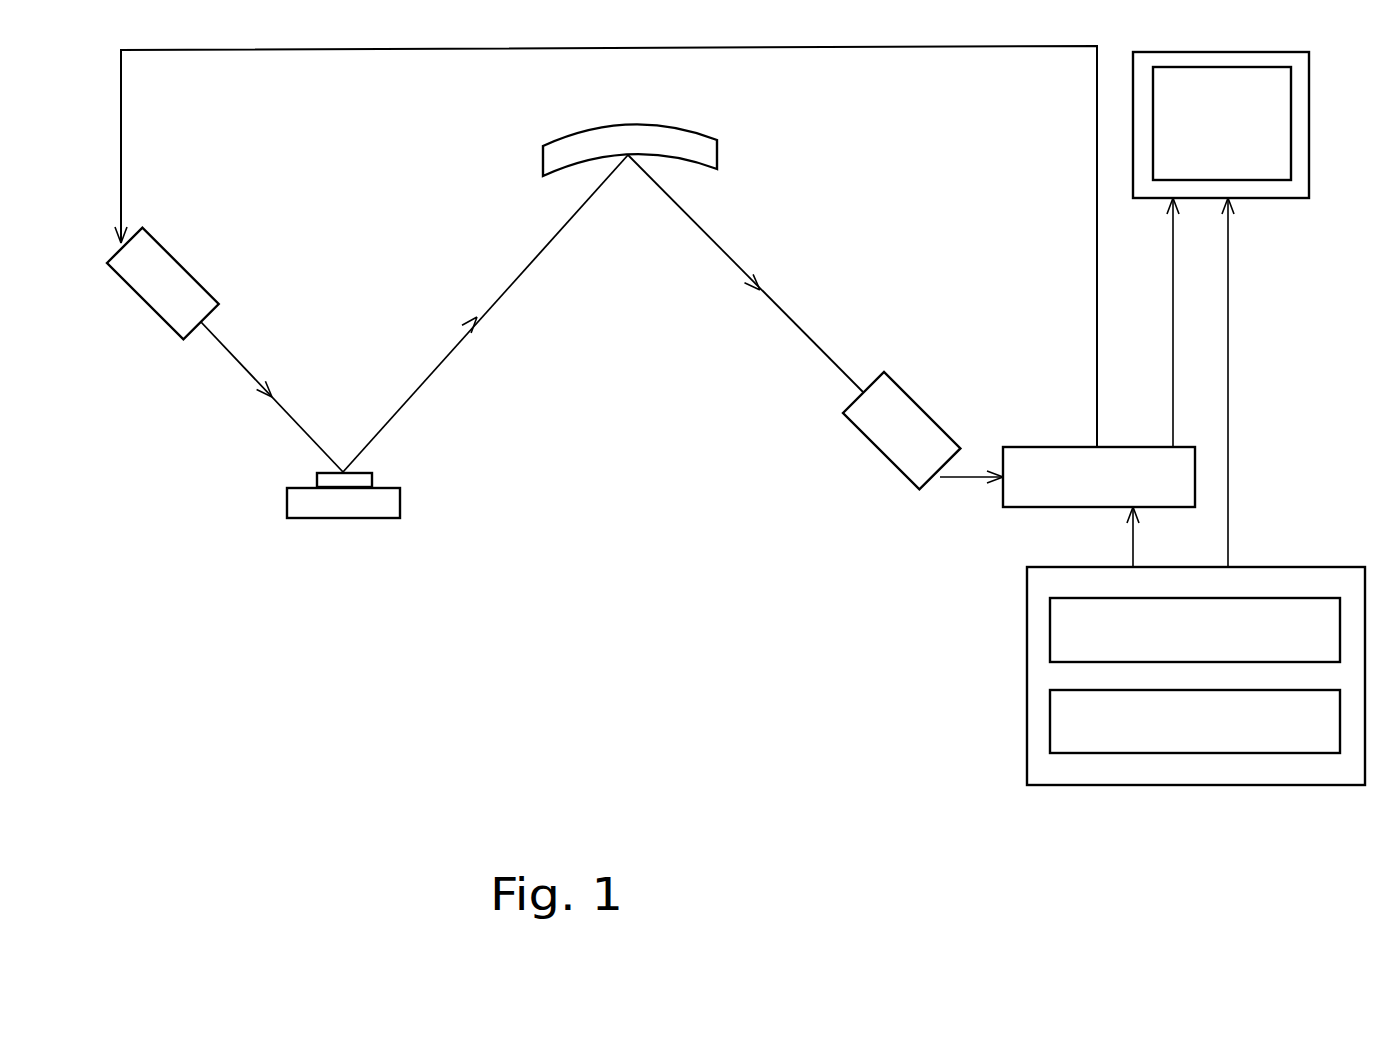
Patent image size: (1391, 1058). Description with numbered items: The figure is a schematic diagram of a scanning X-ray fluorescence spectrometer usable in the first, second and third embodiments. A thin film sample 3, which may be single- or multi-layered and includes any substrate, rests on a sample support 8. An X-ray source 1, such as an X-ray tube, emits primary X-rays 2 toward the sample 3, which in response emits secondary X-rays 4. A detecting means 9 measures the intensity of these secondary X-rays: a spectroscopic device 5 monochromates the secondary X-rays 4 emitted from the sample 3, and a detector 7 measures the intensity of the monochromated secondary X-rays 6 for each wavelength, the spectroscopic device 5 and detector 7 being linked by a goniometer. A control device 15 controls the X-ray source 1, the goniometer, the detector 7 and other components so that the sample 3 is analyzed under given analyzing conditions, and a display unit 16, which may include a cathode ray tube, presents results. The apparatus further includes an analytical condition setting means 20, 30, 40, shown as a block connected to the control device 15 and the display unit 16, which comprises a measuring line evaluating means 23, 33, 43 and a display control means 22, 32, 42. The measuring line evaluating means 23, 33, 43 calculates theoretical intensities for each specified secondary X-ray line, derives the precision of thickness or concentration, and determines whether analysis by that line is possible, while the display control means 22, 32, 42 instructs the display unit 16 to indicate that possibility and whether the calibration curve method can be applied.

The X-ray source 1 is at (178, 264).
The primary X-rays 2 is at (232, 352).
The thin film sample 3 is at (372, 478).
The secondary X-rays 4 is at (517, 282).
The spectroscopic device 5 is at (717, 152).
The secondary X-rays 6 is at (797, 327).
The detector 7 is at (917, 405).
The sample support 8 is at (400, 500).
The detecting means 9 is at (787, 400).
The control device 15 is at (1068, 447).
The display unit 16 is at (1309, 130).
The analytical condition setting means 20 is at (1086, 657).
The analytical condition setting means 30 is at (1086, 657).
The analytical condition setting means 40 is at (1072, 568).
The measuring line evaluating means 23 is at (1074, 632).
The measuring line evaluating means 33 is at (1074, 632).
The measuring line evaluating means 43 is at (1049, 632).
The display control means 22 is at (1079, 723).
The display control means 32 is at (1079, 723).
The display control means 42 is at (1049, 728).